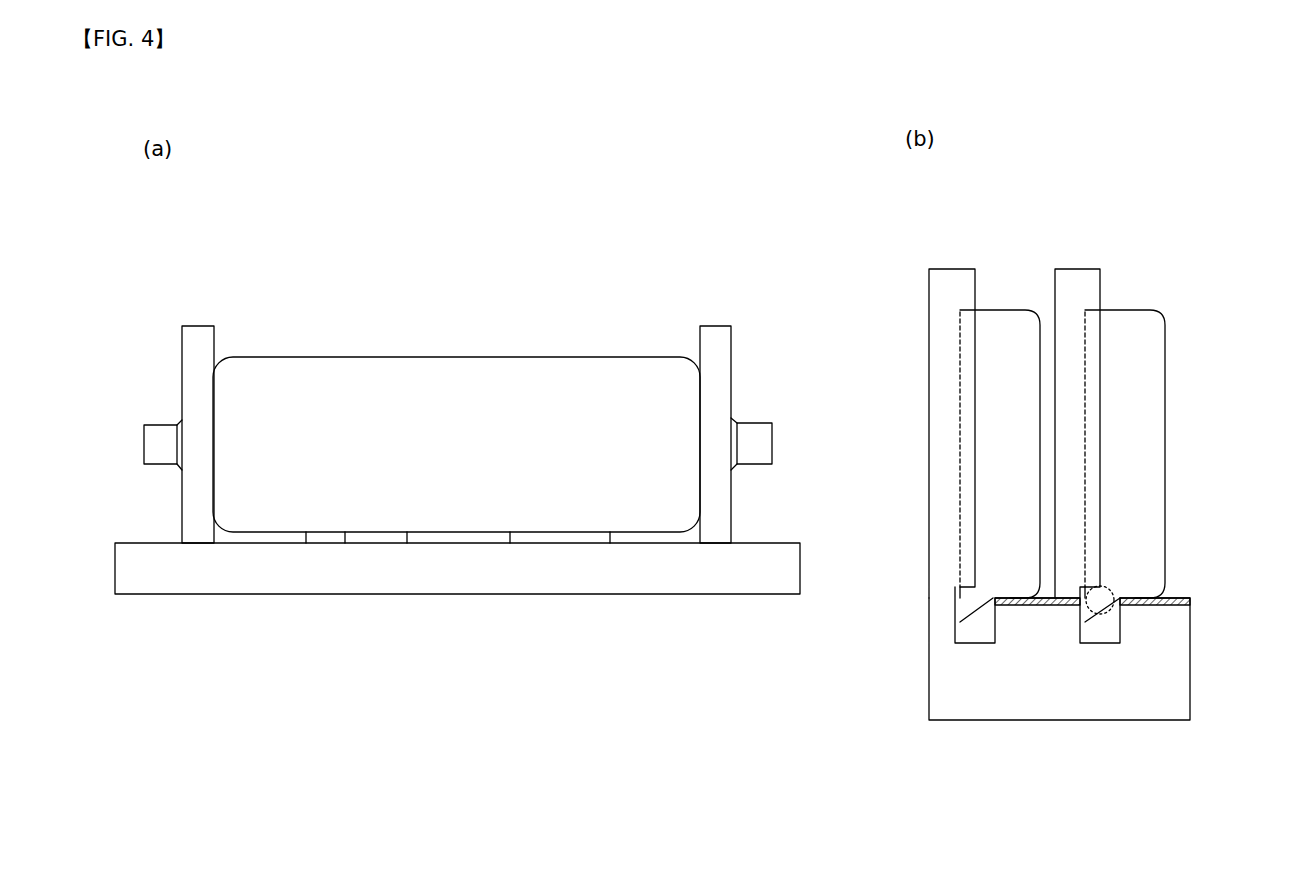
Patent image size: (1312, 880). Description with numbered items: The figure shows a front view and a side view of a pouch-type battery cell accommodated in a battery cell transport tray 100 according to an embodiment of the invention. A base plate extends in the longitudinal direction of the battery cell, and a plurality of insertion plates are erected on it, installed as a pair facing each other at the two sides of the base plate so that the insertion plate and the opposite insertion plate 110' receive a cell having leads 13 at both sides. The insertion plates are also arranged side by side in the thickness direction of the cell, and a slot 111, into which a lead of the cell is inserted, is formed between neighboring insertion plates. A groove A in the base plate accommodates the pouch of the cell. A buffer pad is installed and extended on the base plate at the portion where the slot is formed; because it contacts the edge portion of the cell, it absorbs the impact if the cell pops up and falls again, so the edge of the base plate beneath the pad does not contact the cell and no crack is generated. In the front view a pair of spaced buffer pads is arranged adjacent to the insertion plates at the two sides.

The battery cell transport tray 100 is at (305, 211).
The lead 13 is at (155, 445).
The insertion plate 110' is at (677, 398).
The slot 111 is at (1008, 280).
The groove A is at (975, 630).